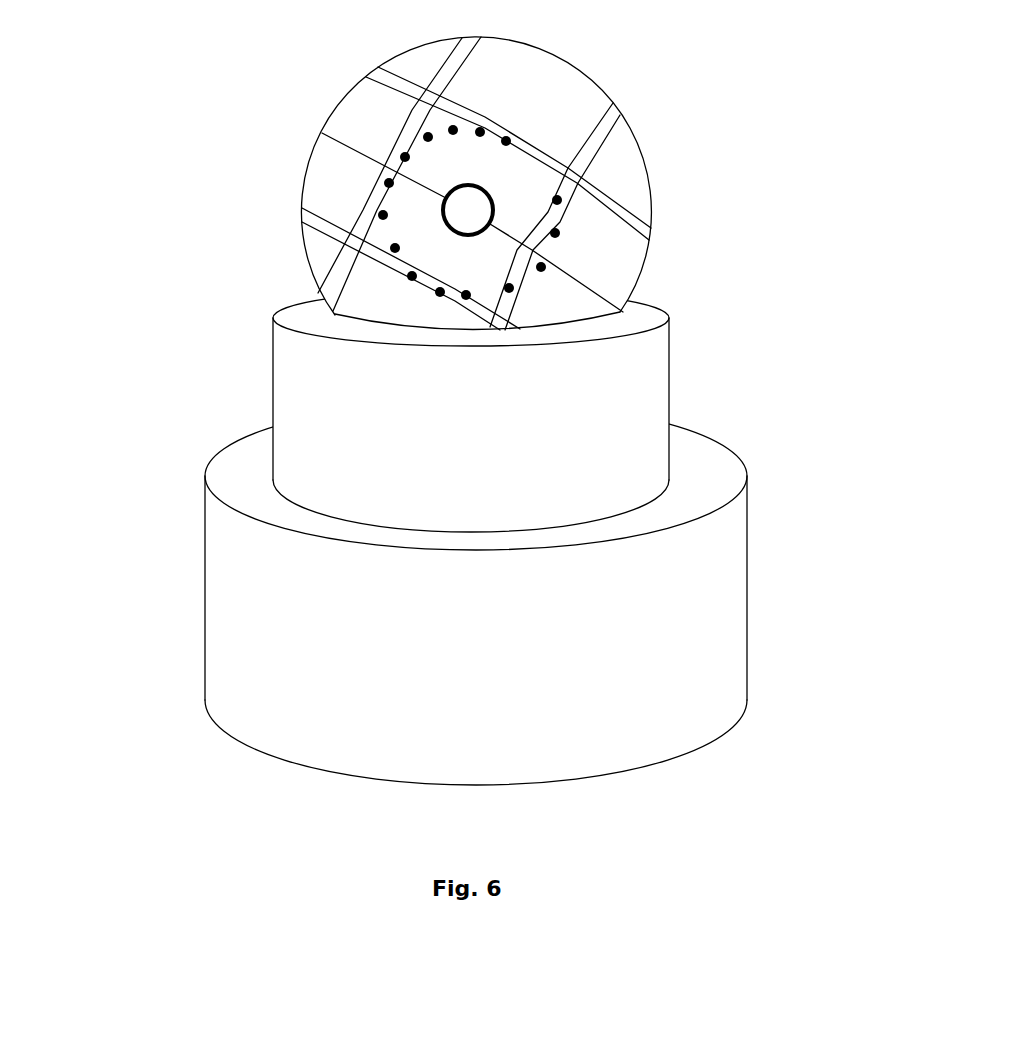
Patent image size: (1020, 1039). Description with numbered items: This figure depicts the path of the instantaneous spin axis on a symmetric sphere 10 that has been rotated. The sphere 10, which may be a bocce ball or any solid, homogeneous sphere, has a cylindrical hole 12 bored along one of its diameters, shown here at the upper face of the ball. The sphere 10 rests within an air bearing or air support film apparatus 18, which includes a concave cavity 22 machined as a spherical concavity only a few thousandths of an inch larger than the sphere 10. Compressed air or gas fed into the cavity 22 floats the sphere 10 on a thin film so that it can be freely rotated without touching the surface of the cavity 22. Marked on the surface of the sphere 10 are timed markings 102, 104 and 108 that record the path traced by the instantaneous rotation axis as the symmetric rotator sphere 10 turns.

The sphere 10 is at (632, 168).
The cylindrical hole 12 is at (463, 202).
The air bearing or air support film apparatus 18 is at (670, 376).
The concave cavity 22 is at (205, 591).
The timed marking of the path of instantaneous rotation axis 102 is at (557, 200).
The timed marking of the path of instantaneous rotation axis 104 is at (555, 233).
The timed marking of the path of instantaneous rotation axis 108 is at (541, 267).